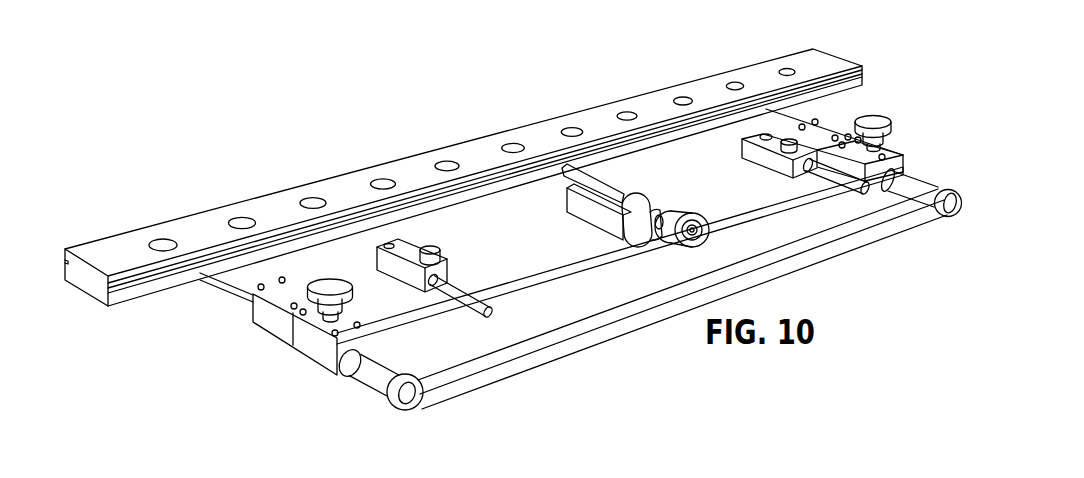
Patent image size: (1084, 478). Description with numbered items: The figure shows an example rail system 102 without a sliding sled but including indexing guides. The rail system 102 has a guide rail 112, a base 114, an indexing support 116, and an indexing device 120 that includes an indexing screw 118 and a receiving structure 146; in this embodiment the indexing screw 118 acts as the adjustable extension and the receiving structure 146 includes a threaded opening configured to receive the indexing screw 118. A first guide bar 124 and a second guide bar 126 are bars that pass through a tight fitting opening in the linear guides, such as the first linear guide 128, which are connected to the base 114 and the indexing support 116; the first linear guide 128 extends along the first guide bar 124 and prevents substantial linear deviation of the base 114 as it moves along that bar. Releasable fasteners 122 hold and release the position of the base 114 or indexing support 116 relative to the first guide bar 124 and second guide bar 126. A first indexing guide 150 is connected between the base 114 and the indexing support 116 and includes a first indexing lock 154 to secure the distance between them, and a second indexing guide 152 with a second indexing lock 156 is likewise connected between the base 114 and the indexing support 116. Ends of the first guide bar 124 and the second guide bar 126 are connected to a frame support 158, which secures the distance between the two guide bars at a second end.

The rail system 102 is at (356, 114).
The guide rail 112 is at (102, 258).
The base 114 is at (762, 124).
The indexing support 116 is at (545, 250).
The indexing screw 118 is at (603, 187).
The indexing device 120 is at (568, 221).
The releasable fasteners 122 is at (332, 286).
The first guide bar 124 is at (374, 374).
The second guide bar 126 is at (915, 183).
The first linear guide 128 is at (272, 322).
The receiving structure 146 is at (643, 193).
The first indexing guide 150 is at (424, 246).
The second indexing guide 152 is at (736, 160).
The first indexing lock 154 is at (440, 253).
The second indexing lock 156 is at (768, 160).
The frame support 158 is at (506, 353).